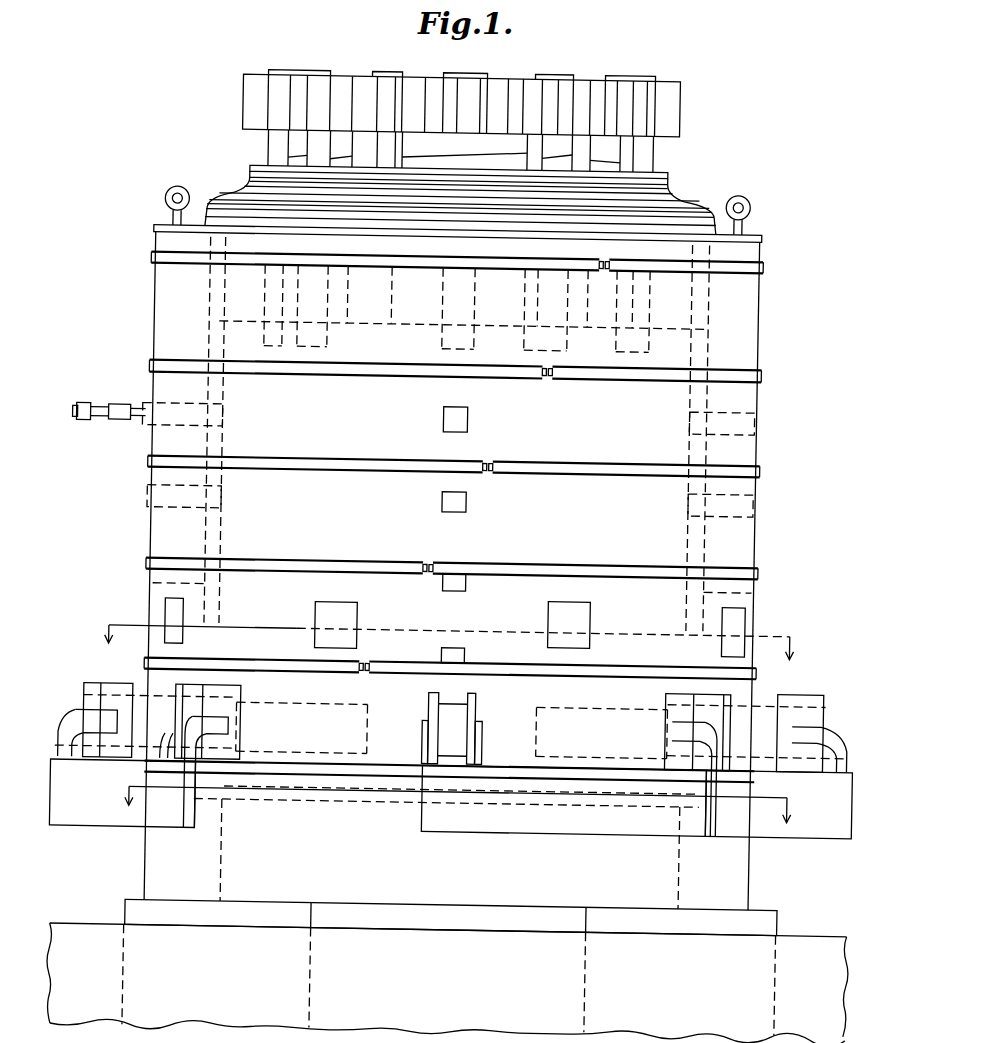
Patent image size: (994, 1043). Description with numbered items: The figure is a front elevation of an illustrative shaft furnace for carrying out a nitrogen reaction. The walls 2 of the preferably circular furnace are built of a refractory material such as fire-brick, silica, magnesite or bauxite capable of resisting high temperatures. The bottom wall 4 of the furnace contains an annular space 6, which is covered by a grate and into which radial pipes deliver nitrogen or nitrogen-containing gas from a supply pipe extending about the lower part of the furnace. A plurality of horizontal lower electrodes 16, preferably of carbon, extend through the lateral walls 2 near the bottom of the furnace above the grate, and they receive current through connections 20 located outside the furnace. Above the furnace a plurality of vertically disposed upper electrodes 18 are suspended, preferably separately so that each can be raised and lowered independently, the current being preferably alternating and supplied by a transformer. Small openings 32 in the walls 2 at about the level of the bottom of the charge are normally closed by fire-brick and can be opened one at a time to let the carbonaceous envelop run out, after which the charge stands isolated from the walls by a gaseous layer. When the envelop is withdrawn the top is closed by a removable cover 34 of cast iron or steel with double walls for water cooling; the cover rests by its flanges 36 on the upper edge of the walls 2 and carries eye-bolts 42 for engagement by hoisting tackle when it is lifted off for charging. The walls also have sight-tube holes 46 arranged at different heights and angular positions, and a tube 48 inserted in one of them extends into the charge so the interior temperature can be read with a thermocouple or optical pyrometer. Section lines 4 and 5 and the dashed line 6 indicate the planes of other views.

The walls 2 is at (160, 309).
The bottom wall 4 is at (452, 644).
The section line 5- 5 is at (457, 802).
The annular space 6 is at (228, 876).
The lower electrodes 16 is at (153, 706).
The upper electrodes 18 is at (271, 152).
The connections 20 is at (107, 816).
The openings 32 is at (171, 618).
The removable cover 34 is at (677, 199).
The flanges 36 is at (154, 233).
The eye-bolts 42 is at (159, 198).
The sight-tube holes 46 is at (450, 413).
The tube 48 is at (130, 416).